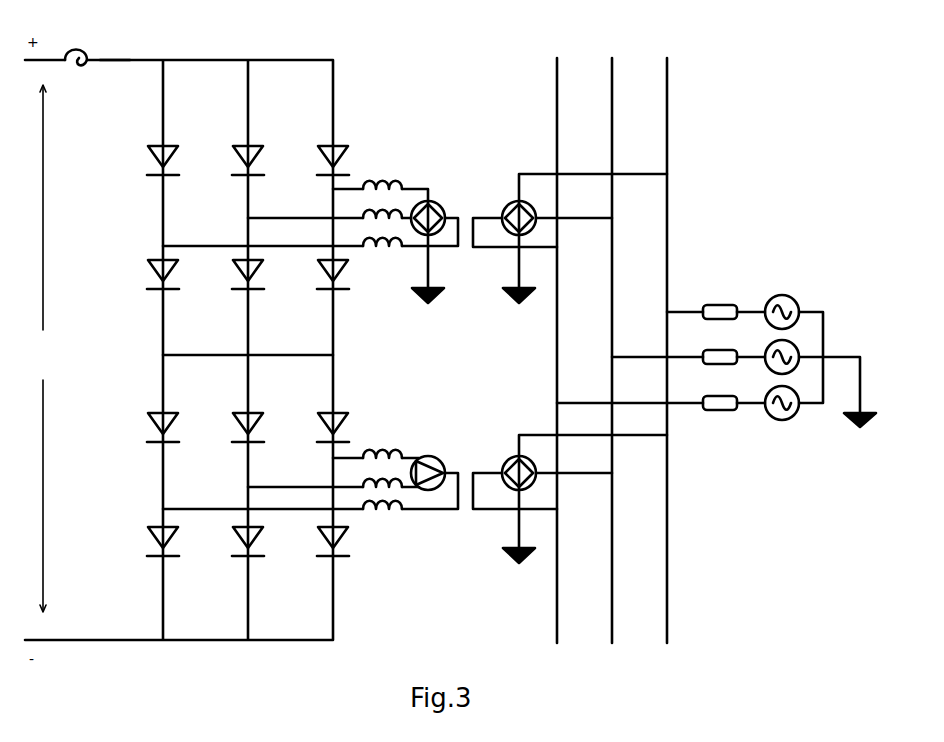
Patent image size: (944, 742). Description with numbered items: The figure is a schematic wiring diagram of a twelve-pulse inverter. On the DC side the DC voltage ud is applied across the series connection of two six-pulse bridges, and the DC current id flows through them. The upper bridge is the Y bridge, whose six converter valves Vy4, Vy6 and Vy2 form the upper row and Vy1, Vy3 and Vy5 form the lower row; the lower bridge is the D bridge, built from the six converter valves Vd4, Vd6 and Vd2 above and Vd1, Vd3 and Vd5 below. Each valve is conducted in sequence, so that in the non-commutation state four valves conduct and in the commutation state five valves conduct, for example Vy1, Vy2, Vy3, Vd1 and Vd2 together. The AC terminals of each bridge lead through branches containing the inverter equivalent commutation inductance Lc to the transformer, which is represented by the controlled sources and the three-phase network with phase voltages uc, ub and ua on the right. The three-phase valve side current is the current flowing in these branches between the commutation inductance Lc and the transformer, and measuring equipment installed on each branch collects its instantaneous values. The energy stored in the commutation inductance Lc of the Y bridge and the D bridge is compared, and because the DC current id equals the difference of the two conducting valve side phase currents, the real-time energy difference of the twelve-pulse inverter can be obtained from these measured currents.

The DC voltage ud is at (43, 348).
The DC current id is at (115, 48).
The converter valve Vy4 is at (142, 160).
The converter valve Vy6 is at (227, 160).
The converter valve Vy2 is at (315, 160).
The converter valve Vy1 is at (142, 274).
The converter valve Vy3 is at (227, 274).
The converter valve Vy5 is at (315, 274).
The converter valve Vd4 is at (142, 427).
The converter valve Vd6 is at (227, 427).
The converter valve Vd2 is at (315, 427).
The converter valve Vd1 is at (142, 541).
The converter valve Vd3 is at (227, 541).
The converter valve Vd5 is at (315, 541).
The inverter equivalent commutation inductance Lc is at (382, 335).
The phase c AC voltage uc is at (539, 350).
The phase b AC voltage ub is at (594, 350).
The phase a AC voltage ua is at (649, 350).